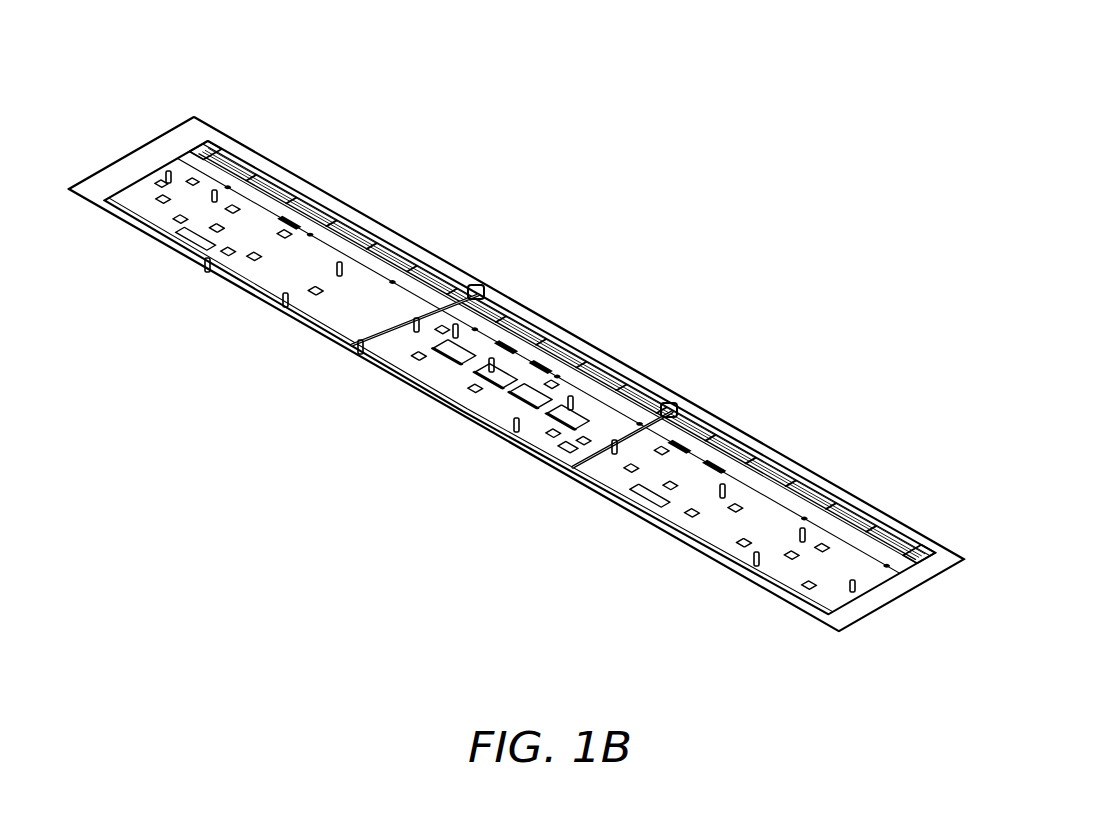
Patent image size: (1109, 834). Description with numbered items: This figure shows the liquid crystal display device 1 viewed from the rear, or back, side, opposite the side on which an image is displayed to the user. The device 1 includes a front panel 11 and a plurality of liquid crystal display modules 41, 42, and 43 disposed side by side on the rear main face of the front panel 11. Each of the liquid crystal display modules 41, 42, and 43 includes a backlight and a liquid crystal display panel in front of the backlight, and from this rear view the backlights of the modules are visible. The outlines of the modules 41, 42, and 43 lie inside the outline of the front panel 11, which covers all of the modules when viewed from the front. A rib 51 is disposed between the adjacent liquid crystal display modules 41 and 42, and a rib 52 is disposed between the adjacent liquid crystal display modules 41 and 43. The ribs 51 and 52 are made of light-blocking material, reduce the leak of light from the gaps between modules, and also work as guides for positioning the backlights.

The liquid crystal display device 1 is at (601, 246).
The front panel 11 is at (203, 138).
The liquid crystal display module 41 is at (477, 393).
The liquid crystal display module 42 is at (316, 299).
The liquid crystal display module 43 is at (713, 535).
The rib 51 is at (475, 287).
The rib 52 is at (671, 410).